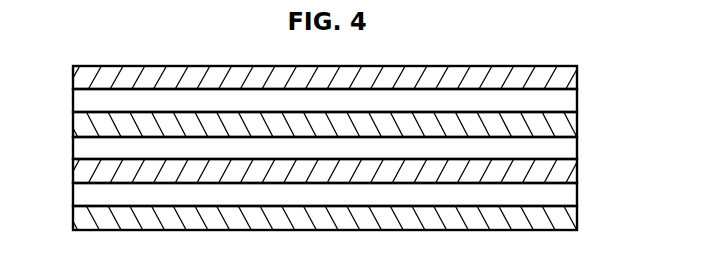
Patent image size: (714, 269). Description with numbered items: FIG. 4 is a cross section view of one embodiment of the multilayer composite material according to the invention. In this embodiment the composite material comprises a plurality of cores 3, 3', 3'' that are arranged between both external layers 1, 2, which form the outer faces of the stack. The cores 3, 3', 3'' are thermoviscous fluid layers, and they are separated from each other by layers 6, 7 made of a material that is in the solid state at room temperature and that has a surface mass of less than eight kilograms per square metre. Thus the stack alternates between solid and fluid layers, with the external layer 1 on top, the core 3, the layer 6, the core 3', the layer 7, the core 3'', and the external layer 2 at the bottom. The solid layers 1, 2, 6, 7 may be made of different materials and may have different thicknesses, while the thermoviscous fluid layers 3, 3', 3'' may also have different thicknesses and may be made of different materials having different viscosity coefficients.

The external layer 1 is at (78, 79).
The external layer 2 is at (78, 220).
The layer 6 is at (78, 125).
The layer 7 is at (78, 172).
The core 3 is at (346, 95).
The core 3' is at (349, 141).
The core 3'' is at (351, 188).